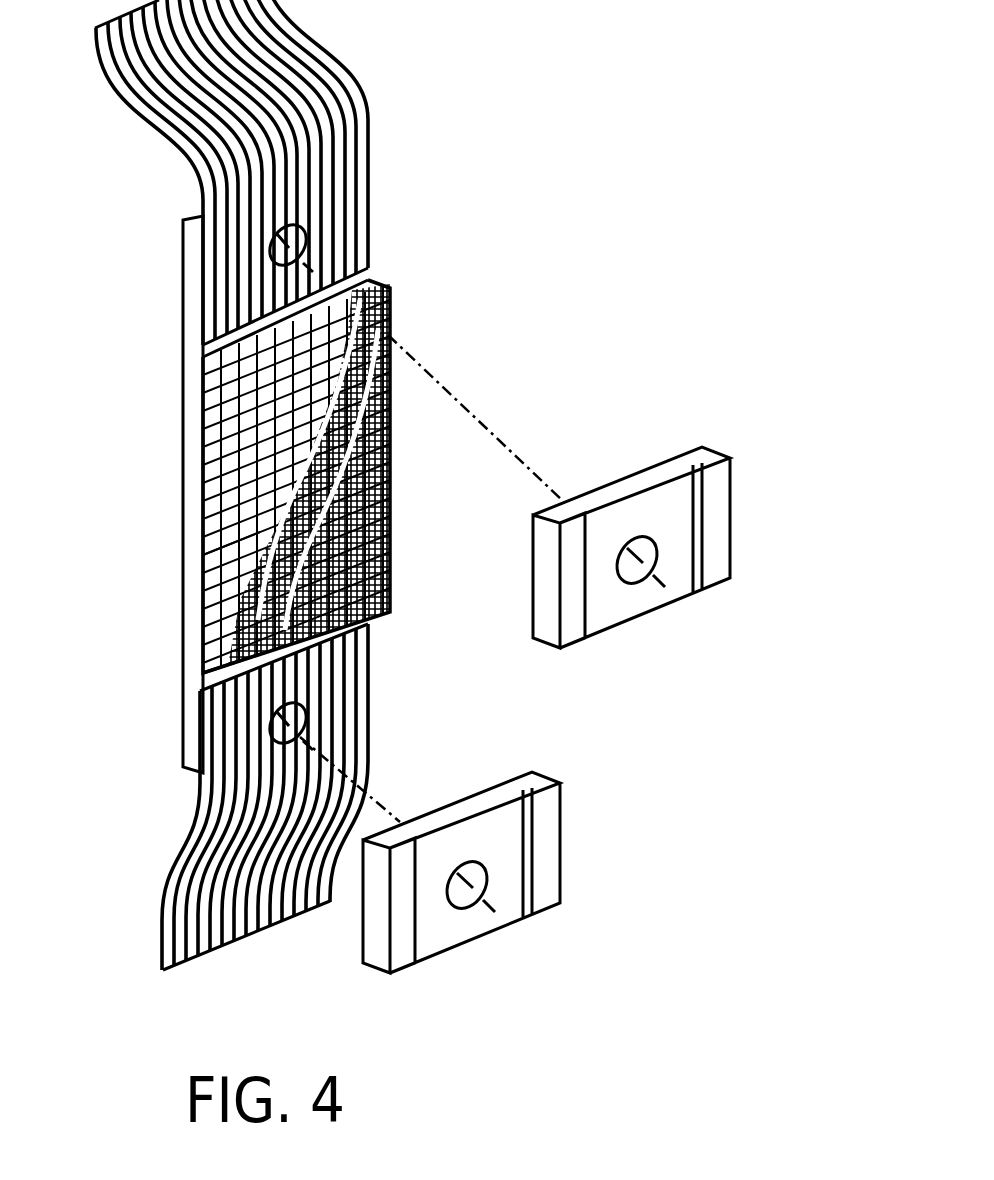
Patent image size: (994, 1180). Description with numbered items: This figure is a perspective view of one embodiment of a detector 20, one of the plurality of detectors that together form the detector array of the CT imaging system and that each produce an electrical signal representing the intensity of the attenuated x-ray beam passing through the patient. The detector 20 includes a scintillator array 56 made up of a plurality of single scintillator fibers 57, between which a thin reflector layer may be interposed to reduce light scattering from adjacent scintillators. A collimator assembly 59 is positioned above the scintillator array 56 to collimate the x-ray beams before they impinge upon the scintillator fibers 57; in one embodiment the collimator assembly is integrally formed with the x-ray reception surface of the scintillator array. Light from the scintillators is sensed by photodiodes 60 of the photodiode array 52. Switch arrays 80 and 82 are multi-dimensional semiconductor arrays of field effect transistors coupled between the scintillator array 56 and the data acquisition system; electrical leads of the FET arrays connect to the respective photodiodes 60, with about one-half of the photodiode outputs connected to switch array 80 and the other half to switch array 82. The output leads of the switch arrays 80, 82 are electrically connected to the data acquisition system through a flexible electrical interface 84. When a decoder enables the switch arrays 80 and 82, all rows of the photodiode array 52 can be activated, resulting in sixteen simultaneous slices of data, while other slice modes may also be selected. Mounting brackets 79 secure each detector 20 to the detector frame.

The detector 20 is at (431, 486).
The photodiode array 52 is at (252, 485).
The scintillator array 56 is at (215, 560).
The scintillator fibers 57 is at (203, 663).
The collimator assembly 59 is at (258, 510).
The photodiodes 60 is at (203, 498).
The mounting brackets 79 is at (675, 493).
The switch array 80 is at (183, 335).
The switch array 82 is at (343, 643).
The flexible electrical interface 84 is at (345, 112).